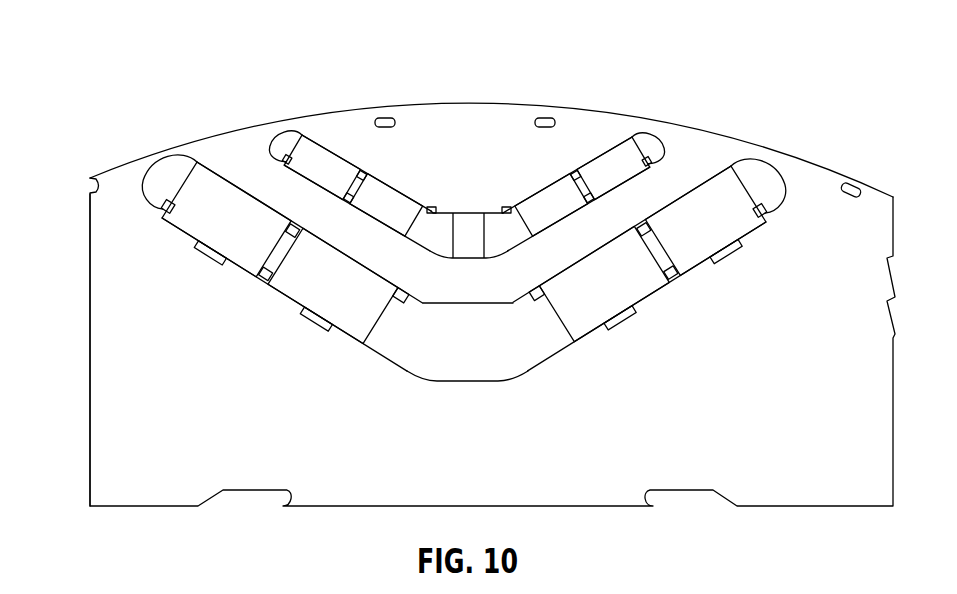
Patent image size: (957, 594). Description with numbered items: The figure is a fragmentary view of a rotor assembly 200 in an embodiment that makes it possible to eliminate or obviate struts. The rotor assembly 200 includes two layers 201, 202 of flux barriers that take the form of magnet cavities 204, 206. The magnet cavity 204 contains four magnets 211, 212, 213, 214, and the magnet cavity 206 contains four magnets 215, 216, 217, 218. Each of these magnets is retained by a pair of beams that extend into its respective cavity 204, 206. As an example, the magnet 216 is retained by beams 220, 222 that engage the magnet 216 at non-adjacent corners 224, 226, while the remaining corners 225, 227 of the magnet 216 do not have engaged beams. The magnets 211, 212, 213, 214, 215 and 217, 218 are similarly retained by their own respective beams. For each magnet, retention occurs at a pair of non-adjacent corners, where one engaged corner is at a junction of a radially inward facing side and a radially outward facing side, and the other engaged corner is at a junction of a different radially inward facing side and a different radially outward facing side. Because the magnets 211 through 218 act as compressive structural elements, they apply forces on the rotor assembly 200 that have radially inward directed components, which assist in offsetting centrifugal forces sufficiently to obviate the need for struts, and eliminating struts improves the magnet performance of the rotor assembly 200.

The rotor assembly 200 is at (799, 148).
The layer 201 is at (281, 110).
The layer 202 is at (110, 149).
The magnet cavity 204 is at (470, 213).
The magnet cavity 206 is at (486, 368).
The magnet 211 is at (322, 157).
The magnet 212 is at (397, 205).
The magnet 213 is at (533, 208).
The magnet 214 is at (631, 152).
The magnet 215 is at (248, 234).
The magnet 216 is at (351, 294).
The magnet 217 is at (623, 300).
The magnet 218 is at (727, 237).
The beam 220 is at (272, 277).
The beam 222 is at (394, 304).
The corner 224 is at (290, 284).
The corner 225 is at (307, 232).
The corner 226 is at (392, 297).
The corner 227 is at (367, 342).